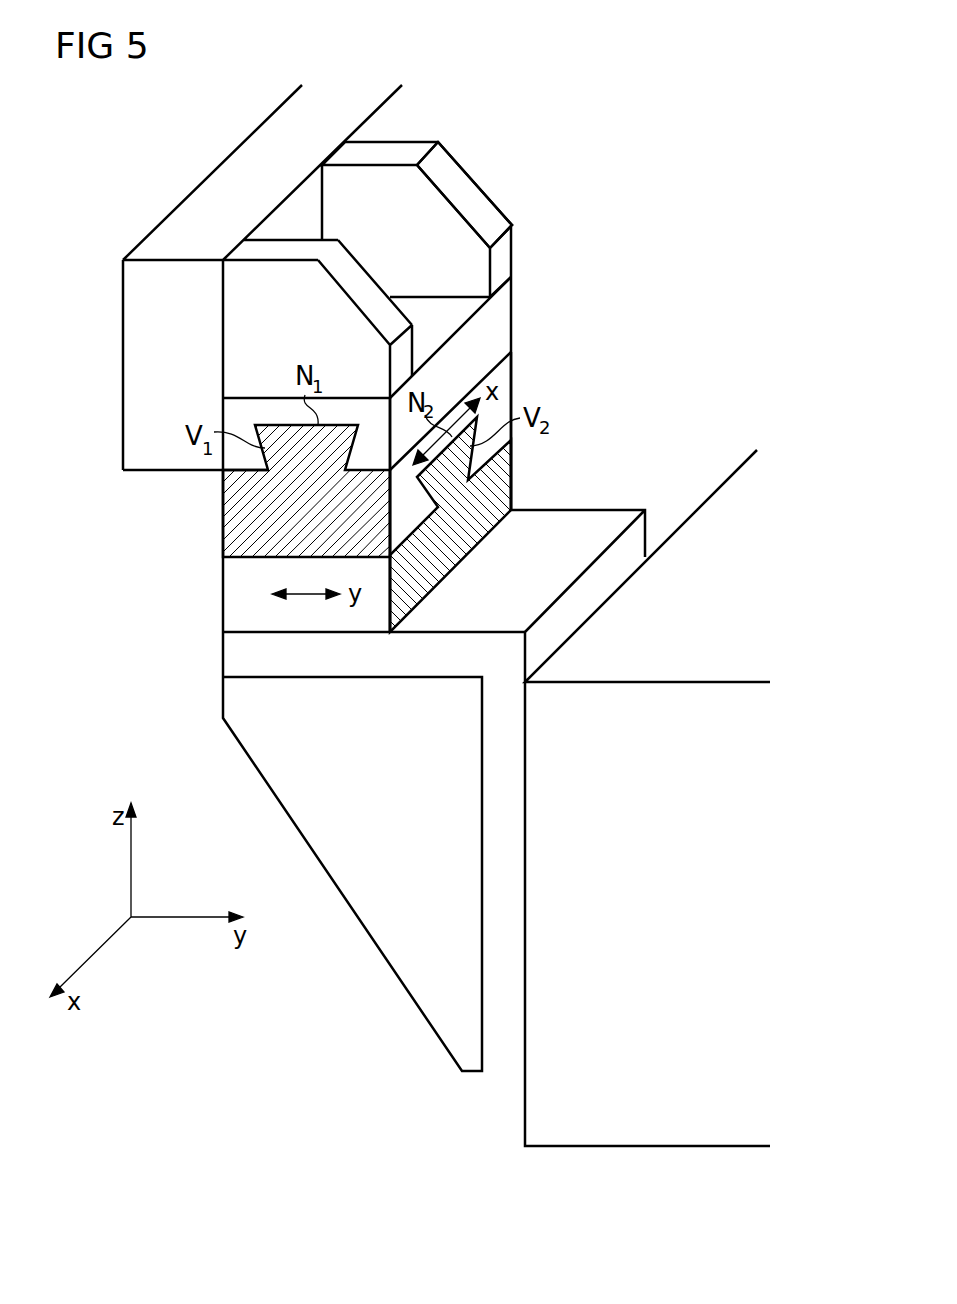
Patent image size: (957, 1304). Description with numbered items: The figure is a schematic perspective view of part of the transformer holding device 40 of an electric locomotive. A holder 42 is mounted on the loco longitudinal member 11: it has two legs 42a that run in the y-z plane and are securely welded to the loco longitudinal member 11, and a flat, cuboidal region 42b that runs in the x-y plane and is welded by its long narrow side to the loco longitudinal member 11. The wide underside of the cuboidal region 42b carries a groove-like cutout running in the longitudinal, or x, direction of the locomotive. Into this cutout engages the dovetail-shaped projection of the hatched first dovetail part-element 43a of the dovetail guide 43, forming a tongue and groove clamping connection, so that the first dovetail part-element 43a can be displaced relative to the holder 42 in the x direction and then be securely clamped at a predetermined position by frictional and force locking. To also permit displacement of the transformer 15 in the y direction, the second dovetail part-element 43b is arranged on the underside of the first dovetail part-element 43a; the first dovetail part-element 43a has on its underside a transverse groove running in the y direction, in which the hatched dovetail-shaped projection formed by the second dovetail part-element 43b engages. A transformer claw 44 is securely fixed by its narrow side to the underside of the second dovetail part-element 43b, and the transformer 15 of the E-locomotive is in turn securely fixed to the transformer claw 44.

The loco longitudinal member 11 is at (218, 172).
The transformer 15 is at (530, 1110).
The transformer holding device 40 is at (591, 138).
The holder 42 is at (453, 174).
The leg 42a is at (494, 217).
The flat cuboidal region 42b is at (505, 325).
The dovetail guide 43 is at (566, 429).
The first dovetail part-element 43a is at (229, 518).
The second dovetail part-element 43b is at (506, 478).
The transformer claw 44 is at (347, 893).